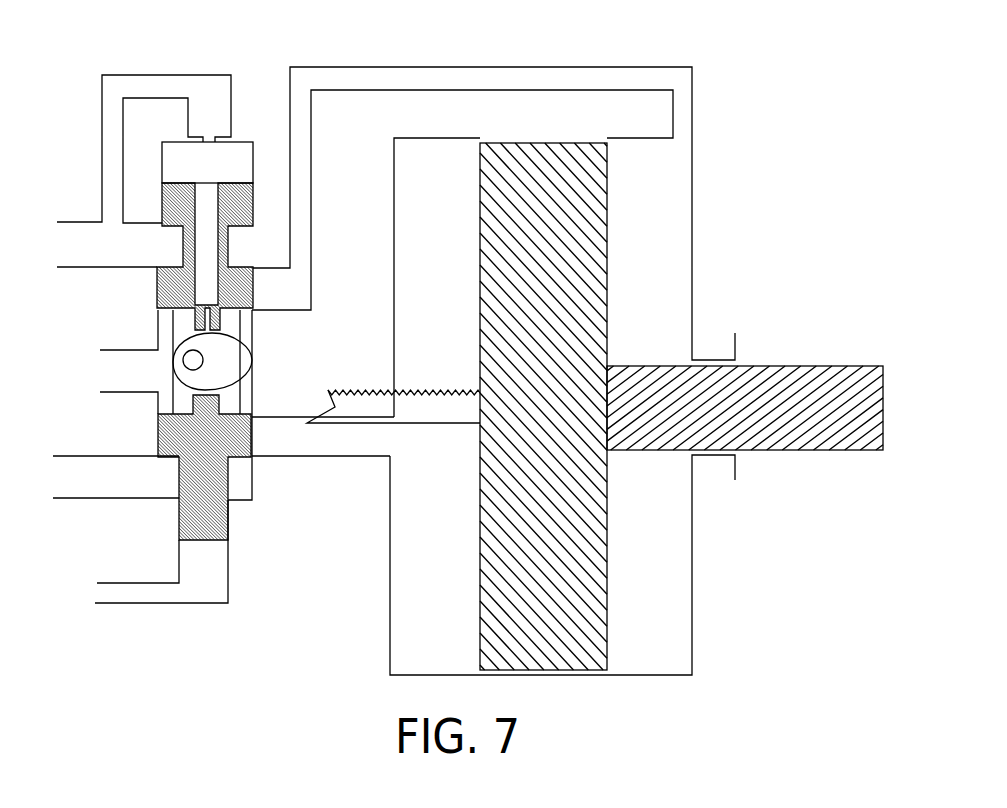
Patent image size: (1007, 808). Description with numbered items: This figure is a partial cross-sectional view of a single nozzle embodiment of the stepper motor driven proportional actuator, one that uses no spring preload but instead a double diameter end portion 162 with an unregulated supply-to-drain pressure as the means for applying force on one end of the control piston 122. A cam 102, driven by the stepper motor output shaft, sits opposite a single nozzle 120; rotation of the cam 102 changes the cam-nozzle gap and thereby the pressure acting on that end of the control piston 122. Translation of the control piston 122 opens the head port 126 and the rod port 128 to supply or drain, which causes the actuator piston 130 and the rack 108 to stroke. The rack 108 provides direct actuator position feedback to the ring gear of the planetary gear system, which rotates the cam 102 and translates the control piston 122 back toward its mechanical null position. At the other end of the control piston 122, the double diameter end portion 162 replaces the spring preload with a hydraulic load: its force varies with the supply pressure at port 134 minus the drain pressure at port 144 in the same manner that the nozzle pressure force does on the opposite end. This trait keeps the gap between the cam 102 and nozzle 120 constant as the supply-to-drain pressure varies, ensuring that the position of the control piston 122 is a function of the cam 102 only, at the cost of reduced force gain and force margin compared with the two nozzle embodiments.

The cam 102 is at (200, 340).
The rack 108 is at (367, 403).
The nozzle 120 is at (192, 318).
The control piston 122 is at (244, 203).
The head port 126 is at (288, 450).
The rod port 128 is at (295, 282).
The actuator piston 130 is at (578, 147).
The port 134 is at (123, 379).
The port 144 is at (105, 237).
The double diameter end portion 162 is at (220, 523).